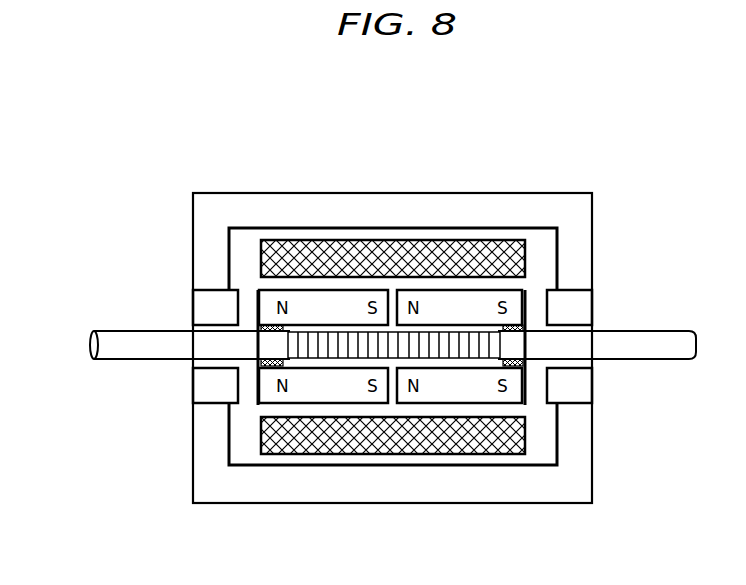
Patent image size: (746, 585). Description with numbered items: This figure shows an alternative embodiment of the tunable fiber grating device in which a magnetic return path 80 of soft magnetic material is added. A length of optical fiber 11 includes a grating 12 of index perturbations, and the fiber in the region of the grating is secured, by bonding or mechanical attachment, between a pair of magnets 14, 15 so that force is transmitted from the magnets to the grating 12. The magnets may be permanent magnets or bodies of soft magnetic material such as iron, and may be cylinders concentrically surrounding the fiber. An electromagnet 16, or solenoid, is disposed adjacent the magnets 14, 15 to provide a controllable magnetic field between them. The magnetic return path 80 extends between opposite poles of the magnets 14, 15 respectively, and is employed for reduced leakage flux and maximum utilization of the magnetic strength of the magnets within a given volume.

The magnetic return path 80 is at (275, 188).
The optical fiber 11 is at (91, 345).
The grating 12 is at (573, 349).
The magnet 14 is at (258, 293).
The magnet 15 is at (527, 298).
The electromagnet 16 is at (373, 455).